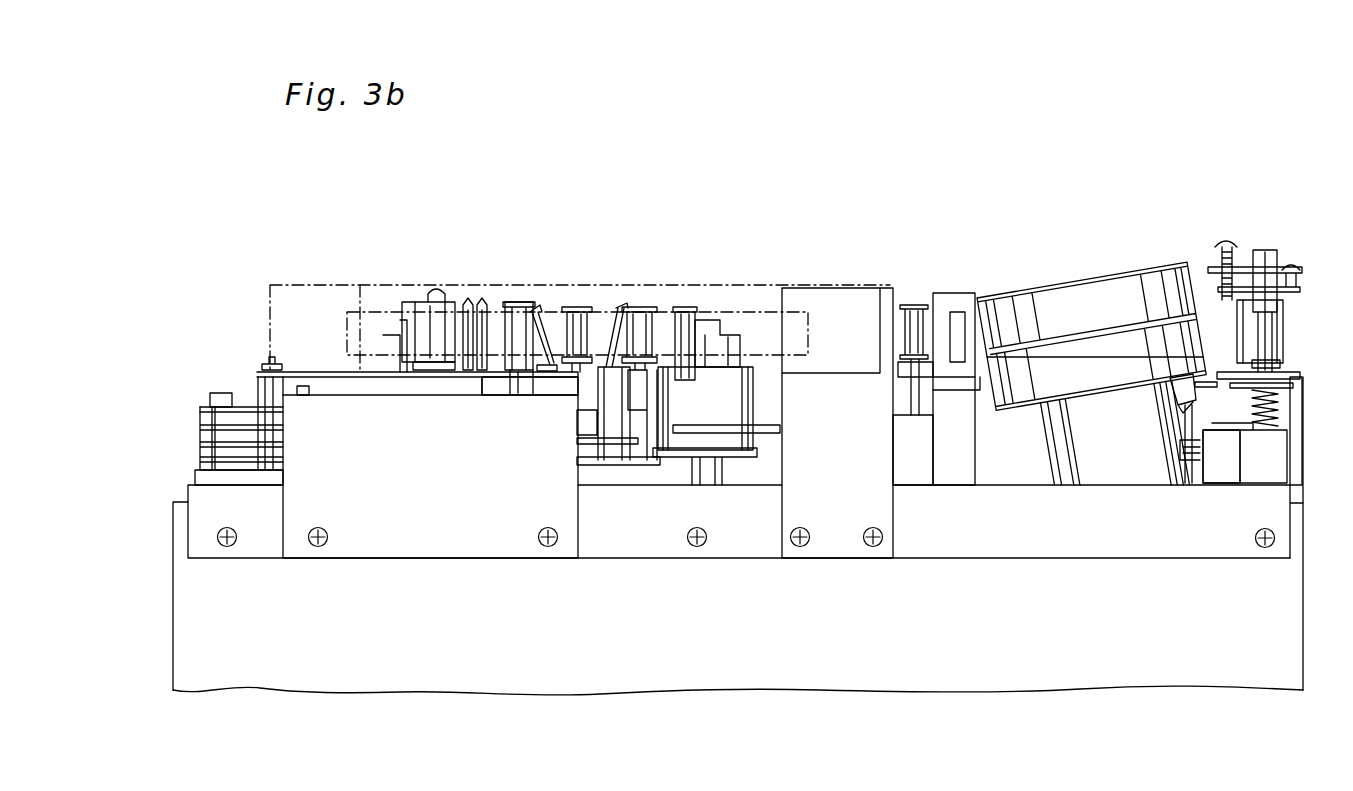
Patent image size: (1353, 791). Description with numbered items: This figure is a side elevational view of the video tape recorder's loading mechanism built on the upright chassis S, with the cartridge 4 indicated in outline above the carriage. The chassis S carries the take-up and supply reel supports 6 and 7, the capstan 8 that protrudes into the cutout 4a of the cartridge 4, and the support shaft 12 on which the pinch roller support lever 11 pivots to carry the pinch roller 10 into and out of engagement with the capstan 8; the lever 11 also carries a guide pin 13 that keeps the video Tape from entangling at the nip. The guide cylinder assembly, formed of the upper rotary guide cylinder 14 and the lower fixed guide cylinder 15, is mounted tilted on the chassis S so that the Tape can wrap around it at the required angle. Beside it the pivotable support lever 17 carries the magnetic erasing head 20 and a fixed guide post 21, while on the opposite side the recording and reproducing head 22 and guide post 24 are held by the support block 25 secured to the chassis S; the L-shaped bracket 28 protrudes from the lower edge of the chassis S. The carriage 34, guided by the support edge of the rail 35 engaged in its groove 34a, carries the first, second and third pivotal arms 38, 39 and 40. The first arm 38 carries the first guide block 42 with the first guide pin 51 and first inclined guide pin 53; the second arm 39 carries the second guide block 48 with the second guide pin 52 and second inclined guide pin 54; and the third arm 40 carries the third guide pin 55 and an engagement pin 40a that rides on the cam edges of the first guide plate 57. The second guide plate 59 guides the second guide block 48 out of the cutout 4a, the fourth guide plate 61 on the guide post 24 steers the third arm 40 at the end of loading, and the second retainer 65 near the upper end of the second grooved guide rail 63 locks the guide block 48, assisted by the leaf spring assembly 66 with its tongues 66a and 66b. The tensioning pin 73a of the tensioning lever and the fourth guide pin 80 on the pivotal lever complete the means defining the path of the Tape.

The cartridge 4 is at (318, 283).
The cutout 4a is at (362, 305).
The take-up reel support 6 is at (380, 345).
The supply reel support 7 is at (757, 396).
The capstan 8 is at (437, 290).
The pinch roller 10 is at (406, 300).
The pinch roller support lever 11 is at (318, 371).
The support shaft 12 is at (268, 358).
The guide pin 13 is at (470, 300).
The upper guide cylinder 14 is at (1070, 288).
The lower guide cylinder 15 is at (1108, 373).
The pivotable support lever 17 is at (962, 398).
The magnetic erasing head 20 is at (958, 312).
The fixed guide post 21 is at (898, 300).
The magnetic recording and/or reproducing head 22 is at (1237, 325).
The guide post 24 is at (1270, 333).
The support block 25 is at (1243, 266).
The L-shaped bracket 28 is at (843, 560).
The carriage 34 is at (203, 478).
The grooves 34a is at (214, 393).
The rail 35 is at (665, 560).
The first pivotal arm 38 is at (247, 448).
The second pivotal arm 39 is at (245, 427).
The third pivotal arm 40 is at (243, 428).
The engagement pin 40a is at (299, 396).
The first guide block 42 is at (632, 450).
The second guide block 48 is at (553, 388).
The first guide pin 51 is at (682, 322).
The second guide pin 52 is at (593, 322).
The first inclined guide pin 53 is at (643, 322).
The second inclined guide pin 54 is at (553, 308).
The third guide pin 55 is at (540, 322).
The first guide plate 57 is at (281, 545).
The second guide plate 59 is at (580, 447).
The fourth guide plate 61 is at (1293, 400).
The second grooved guide rail 63 is at (1215, 455).
The second retainer 65 is at (1222, 393).
The leaf spring assembly 66 is at (1197, 413).
The first tongue 66a is at (1235, 432).
The second tongue 66b is at (1195, 446).
The tensioning pin 73a is at (712, 322).
The fourth guide pin 80 is at (498, 300).
The upright chassis S is at (545, 655).
The video tape Tape is at (760, 298).